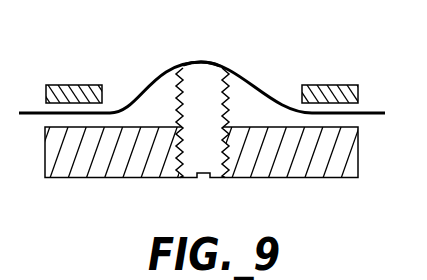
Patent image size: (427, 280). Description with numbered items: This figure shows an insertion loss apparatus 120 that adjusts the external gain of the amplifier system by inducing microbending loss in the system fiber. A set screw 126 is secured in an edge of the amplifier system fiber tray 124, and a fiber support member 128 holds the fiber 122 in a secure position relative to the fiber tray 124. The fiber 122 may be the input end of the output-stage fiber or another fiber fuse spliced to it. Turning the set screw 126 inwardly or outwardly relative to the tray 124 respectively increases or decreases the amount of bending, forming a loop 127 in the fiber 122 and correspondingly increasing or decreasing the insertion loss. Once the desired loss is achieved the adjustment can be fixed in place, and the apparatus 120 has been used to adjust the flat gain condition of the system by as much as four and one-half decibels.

The insertion loss apparatus 120 is at (275, 64).
The fiber 122 is at (155, 80).
The fiber tray 124 is at (45, 167).
The set screw 126 is at (218, 180).
The loop 127 is at (203, 62).
The fiber support member 128 is at (90, 84).